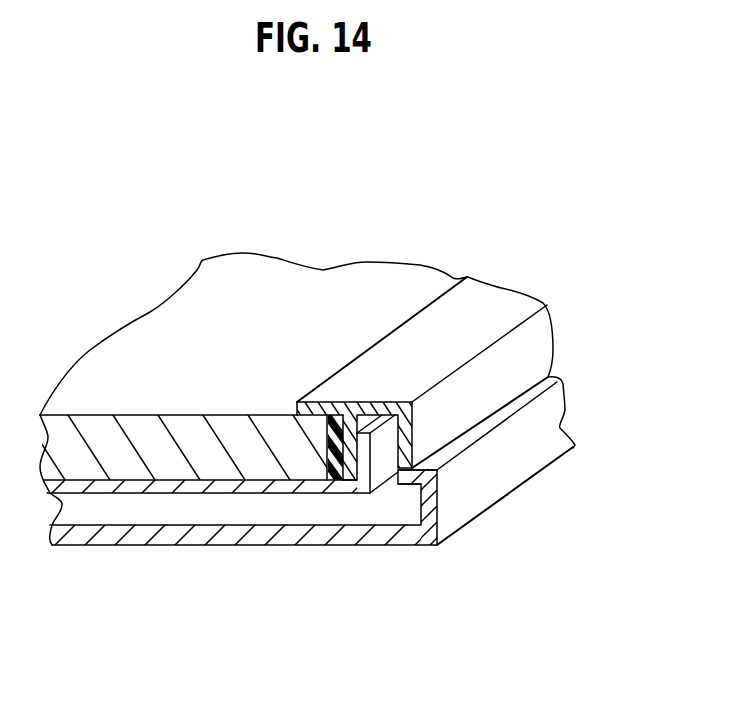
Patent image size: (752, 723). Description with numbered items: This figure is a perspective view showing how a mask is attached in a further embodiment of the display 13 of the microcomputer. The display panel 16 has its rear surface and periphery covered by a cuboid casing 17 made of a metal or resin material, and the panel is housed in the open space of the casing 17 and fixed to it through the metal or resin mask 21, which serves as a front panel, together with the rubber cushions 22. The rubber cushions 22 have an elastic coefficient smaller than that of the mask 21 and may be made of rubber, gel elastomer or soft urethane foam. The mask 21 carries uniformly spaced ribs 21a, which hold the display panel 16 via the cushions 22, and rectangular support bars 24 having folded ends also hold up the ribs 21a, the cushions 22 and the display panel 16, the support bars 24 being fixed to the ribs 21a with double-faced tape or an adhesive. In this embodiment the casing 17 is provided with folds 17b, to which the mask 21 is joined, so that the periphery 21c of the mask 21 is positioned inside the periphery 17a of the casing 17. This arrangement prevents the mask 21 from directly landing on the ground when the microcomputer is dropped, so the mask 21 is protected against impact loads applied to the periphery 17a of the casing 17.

The display 13 is at (322, 205).
The display panel 16 is at (112, 368).
The casing 17 is at (262, 556).
The periphery of the casing 17a is at (478, 496).
The folds 17b is at (412, 487).
The mask 21 is at (467, 312).
The ribs 21a is at (350, 478).
The periphery of the mask 21c is at (530, 362).
The rubber cushions 22 is at (326, 452).
The support bars 24 is at (176, 488).